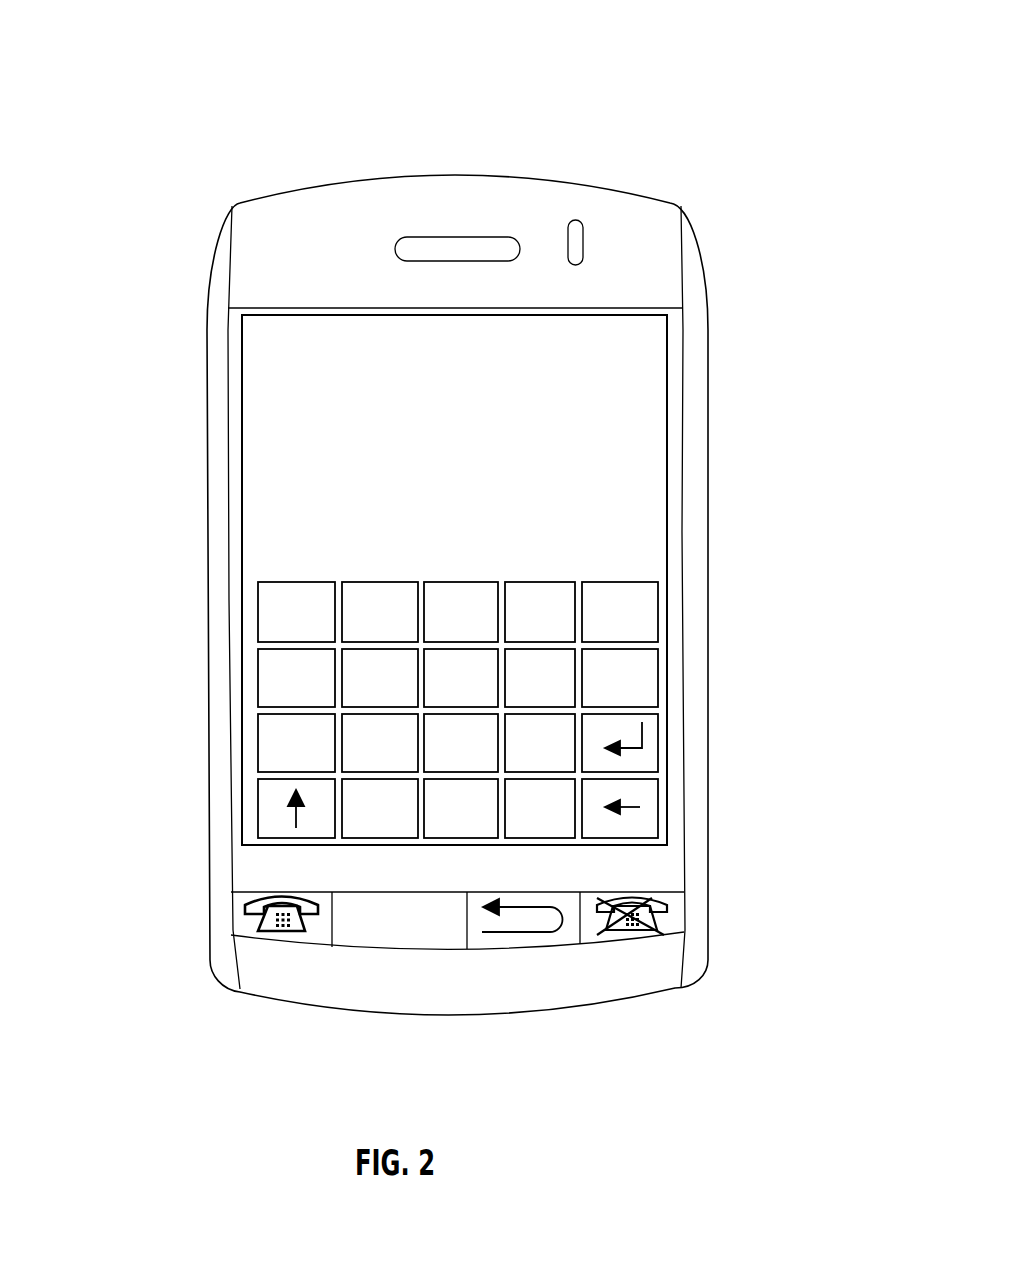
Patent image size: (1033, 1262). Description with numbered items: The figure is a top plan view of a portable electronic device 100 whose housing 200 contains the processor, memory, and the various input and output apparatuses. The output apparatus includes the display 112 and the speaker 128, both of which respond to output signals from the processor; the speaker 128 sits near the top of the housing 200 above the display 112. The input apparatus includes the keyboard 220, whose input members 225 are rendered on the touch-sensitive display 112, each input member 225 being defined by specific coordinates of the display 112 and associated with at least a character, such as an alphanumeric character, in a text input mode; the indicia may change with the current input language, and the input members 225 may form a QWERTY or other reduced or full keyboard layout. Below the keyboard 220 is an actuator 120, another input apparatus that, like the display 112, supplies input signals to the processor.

The portable electronic device 100 is at (616, 122).
The housing 200 is at (708, 533).
The speaker 128 is at (475, 237).
The display 112 is at (612, 370).
The keyboard 220 is at (198, 573).
The input members 225 is at (262, 696).
The actuator 120 is at (243, 882).